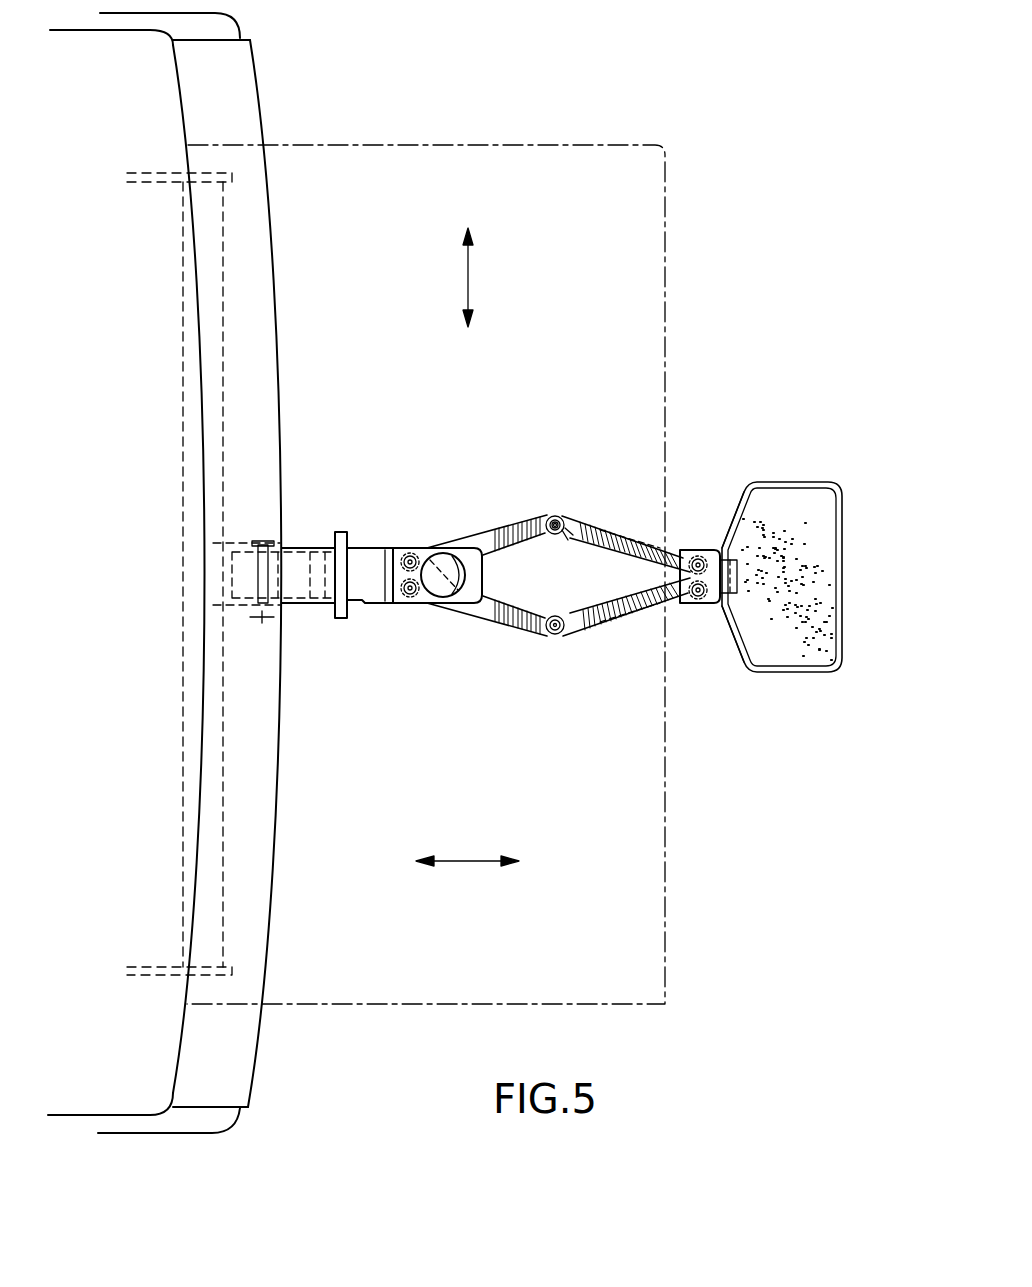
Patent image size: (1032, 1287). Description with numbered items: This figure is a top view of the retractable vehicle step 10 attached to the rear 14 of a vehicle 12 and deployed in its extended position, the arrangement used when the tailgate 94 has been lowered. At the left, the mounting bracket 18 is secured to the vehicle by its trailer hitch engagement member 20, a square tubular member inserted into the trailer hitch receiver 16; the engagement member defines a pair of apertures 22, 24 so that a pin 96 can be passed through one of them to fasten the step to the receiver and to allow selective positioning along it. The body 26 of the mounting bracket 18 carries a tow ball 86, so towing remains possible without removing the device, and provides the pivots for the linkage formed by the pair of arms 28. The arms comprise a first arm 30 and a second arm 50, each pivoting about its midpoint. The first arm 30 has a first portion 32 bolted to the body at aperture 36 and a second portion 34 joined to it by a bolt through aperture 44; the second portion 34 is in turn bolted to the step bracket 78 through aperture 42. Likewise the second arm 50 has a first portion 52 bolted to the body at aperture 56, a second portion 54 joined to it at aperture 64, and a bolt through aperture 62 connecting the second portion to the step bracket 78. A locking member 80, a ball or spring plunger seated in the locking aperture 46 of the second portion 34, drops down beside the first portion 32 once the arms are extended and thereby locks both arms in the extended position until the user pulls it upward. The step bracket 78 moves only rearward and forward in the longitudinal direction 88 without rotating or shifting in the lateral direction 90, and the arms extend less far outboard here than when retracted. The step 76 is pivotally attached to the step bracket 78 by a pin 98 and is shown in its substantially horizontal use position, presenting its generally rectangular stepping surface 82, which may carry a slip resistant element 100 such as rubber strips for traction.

The retractable vehicle step 10 is at (725, 362).
The vehicle 12 is at (240, 68).
The rear of the vehicle 14 is at (286, 1049).
The trailer hitch receiver 16 is at (318, 547).
The mounting bracket 18 is at (355, 532).
The trailer hitch engagement member 20 is at (225, 578).
The aperture 22 is at (245, 590).
The aperture 24 is at (300, 604).
The body 26 is at (391, 536).
The pair of arms 28 is at (481, 686).
The first arm 30 is at (548, 486).
The first portion 32 is at (500, 532).
The second portion 34 is at (620, 538).
The aperture 36 is at (414, 553).
The aperture 42 is at (698, 556).
The aperture 44 is at (548, 518).
The locking aperture 46 is at (556, 536).
The second arm 50 is at (550, 666).
The first portion 52 is at (490, 621).
The second portion 54 is at (617, 622).
The aperture 56 is at (408, 597).
The aperture 62 is at (698, 598).
The aperture 64 is at (547, 635).
The step 76 is at (817, 512).
The step bracket 78 is at (720, 556).
The locking member 80 is at (567, 528).
The stepping surface 82 is at (778, 631).
The tow ball 86 is at (437, 598).
The longitudinal direction 88 is at (467, 862).
The lateral direction 90 is at (468, 283).
The tailgate 94 is at (398, 143).
The pin 96 is at (262, 622).
The pin 98 is at (733, 603).
The slip resistant element 100 is at (810, 633).